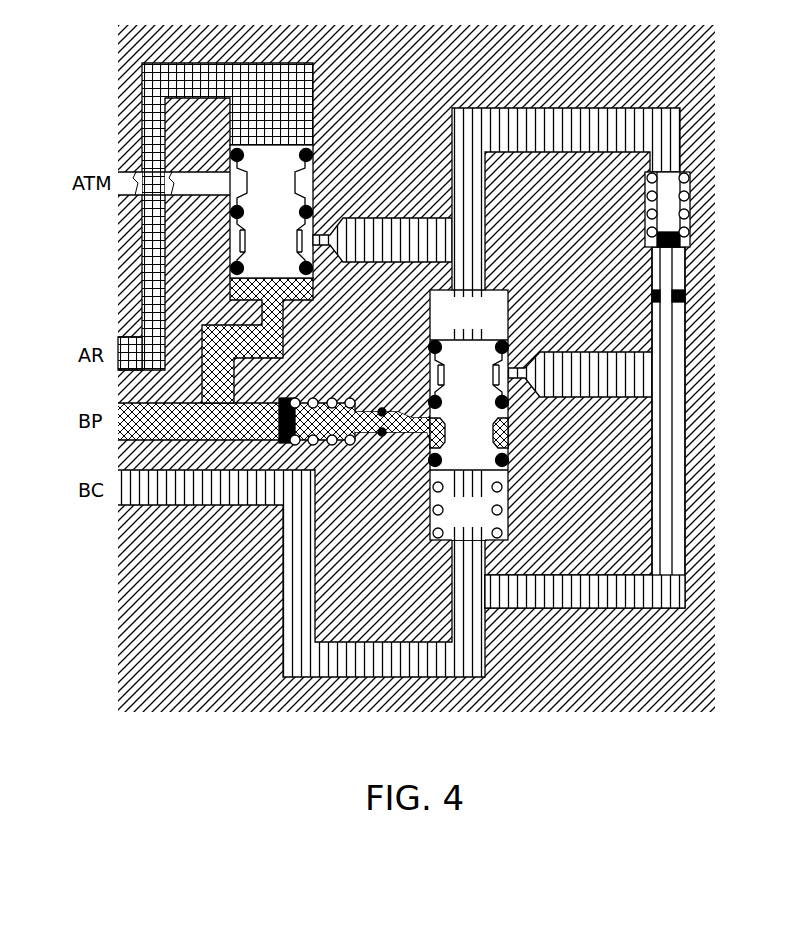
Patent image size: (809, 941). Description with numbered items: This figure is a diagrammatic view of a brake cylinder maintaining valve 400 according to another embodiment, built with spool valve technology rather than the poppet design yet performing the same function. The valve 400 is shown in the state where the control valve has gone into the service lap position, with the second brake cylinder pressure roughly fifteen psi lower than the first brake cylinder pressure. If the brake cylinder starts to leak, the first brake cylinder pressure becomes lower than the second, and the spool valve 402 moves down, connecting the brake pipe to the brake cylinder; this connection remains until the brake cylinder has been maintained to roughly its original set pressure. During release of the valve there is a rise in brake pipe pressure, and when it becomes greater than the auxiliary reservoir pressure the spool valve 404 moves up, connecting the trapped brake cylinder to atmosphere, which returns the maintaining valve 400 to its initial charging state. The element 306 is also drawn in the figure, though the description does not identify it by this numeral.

The brake cylinder maintaining valve 400 is at (90, 120).
The spool valve 402 is at (508, 352).
The spool valve 404 is at (314, 203).
The check valve 306 is at (648, 238).